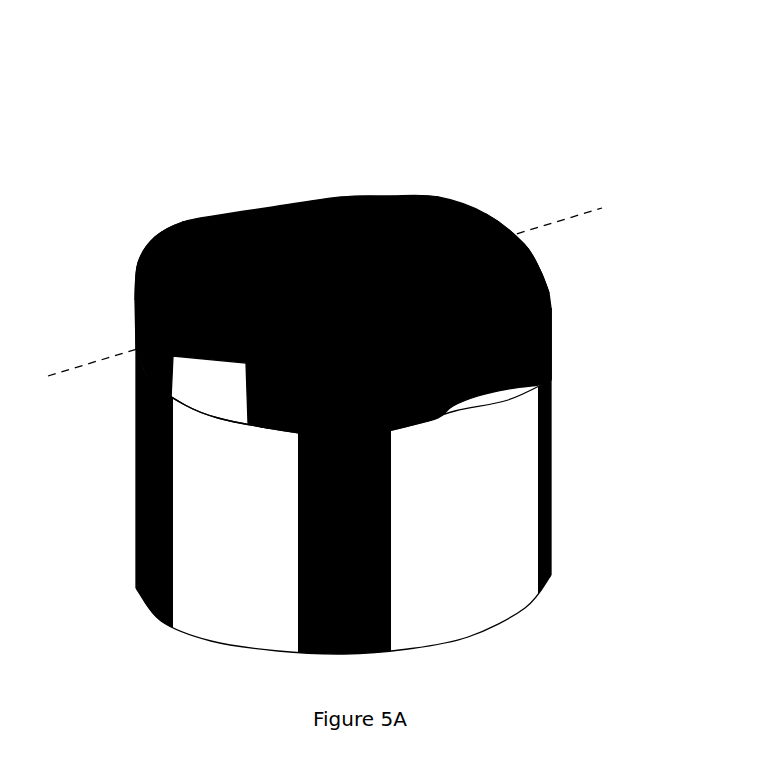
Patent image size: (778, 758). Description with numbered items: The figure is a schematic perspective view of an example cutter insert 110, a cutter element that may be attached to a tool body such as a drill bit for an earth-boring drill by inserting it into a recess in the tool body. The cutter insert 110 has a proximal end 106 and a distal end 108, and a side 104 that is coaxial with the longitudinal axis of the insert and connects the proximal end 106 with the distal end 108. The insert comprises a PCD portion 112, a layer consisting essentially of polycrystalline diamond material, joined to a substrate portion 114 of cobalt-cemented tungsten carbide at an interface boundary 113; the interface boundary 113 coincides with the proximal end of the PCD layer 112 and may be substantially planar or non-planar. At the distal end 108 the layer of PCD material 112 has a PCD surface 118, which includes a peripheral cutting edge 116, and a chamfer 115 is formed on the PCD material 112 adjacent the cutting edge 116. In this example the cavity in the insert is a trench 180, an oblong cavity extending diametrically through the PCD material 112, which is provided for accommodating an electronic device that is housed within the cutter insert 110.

The cutter insert 110 is at (357, 345).
The side 104 is at (442, 402).
The proximal end 106 is at (522, 612).
The distal end 108 is at (467, 205).
The PCD portion 112 is at (543, 332).
The interface boundary 113 is at (213, 418).
The substrate portion 114 is at (543, 417).
The chamfer 115 is at (541, 275).
The peripheral cutting edge 116 is at (150, 238).
The PCD surface 118 is at (175, 216).
The trench 180 is at (260, 208).